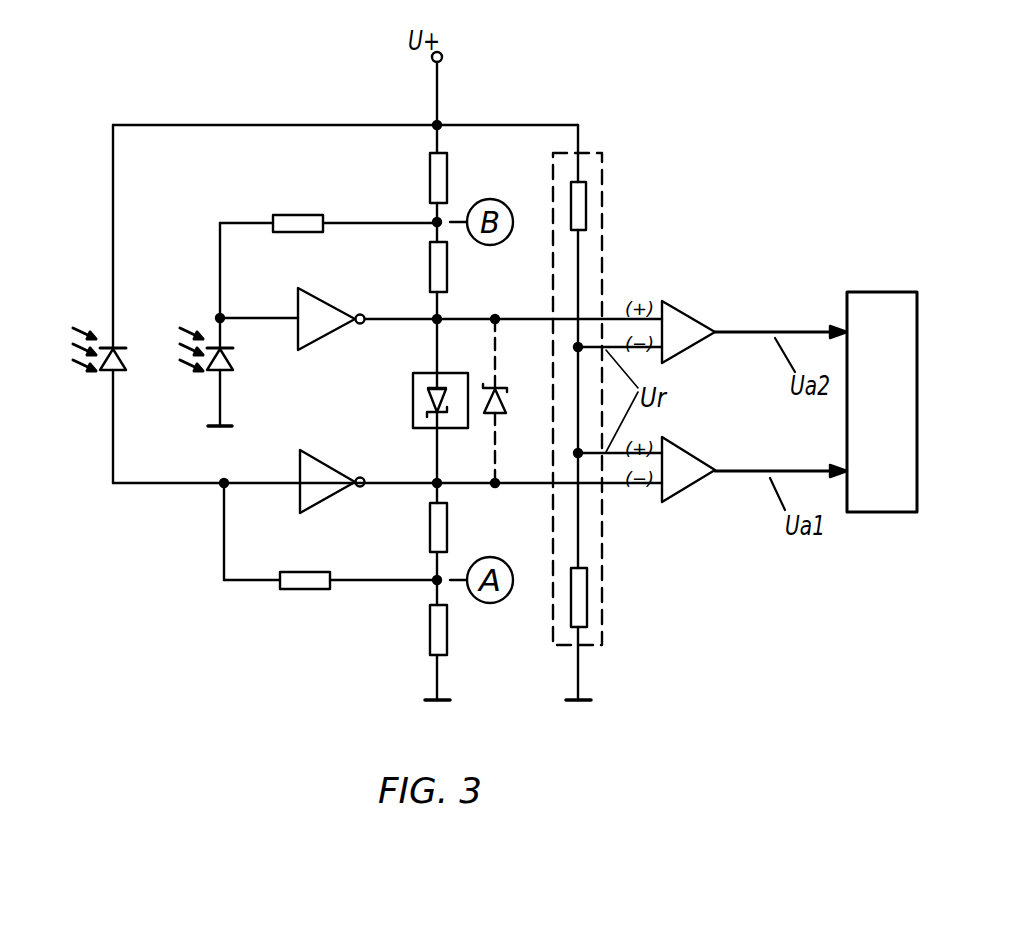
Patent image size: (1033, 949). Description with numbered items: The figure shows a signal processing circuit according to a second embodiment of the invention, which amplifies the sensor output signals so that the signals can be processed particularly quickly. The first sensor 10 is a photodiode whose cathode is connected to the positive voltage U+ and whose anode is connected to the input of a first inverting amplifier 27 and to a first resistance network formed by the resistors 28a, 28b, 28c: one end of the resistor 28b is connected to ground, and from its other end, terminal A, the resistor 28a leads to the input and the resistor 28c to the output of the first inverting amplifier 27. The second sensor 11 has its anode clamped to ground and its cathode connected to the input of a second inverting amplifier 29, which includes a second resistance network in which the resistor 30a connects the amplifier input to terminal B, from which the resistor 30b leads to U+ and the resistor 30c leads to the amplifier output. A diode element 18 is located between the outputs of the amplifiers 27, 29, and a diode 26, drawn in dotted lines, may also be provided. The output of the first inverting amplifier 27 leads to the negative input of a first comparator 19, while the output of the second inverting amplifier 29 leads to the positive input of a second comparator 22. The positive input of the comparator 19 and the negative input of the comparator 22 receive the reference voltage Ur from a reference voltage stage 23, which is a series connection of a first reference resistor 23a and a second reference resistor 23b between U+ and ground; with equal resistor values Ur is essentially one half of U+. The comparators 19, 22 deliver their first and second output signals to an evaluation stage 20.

The first sensor 10 is at (106, 372).
The second sensor 11 is at (213, 372).
The diode element 18 is at (413, 380).
The first comparator 19 is at (668, 498).
The evaluation stage 20 is at (882, 402).
The second comparator 22 is at (683, 313).
The reference voltage stage 23 is at (602, 153).
The first reference resistor 23a is at (586, 210).
The second reference resistor 23b is at (589, 590).
The diode 26 is at (500, 415).
The first inverting amplifier 27 is at (331, 467).
The resistor 28a is at (305, 591).
The resistor 28b is at (447, 630).
The resistor 28c is at (447, 528).
The second inverting amplifier 29 is at (333, 307).
The resistor 30a is at (303, 214).
The resistor 30b is at (447, 175).
The resistor 30c is at (447, 275).